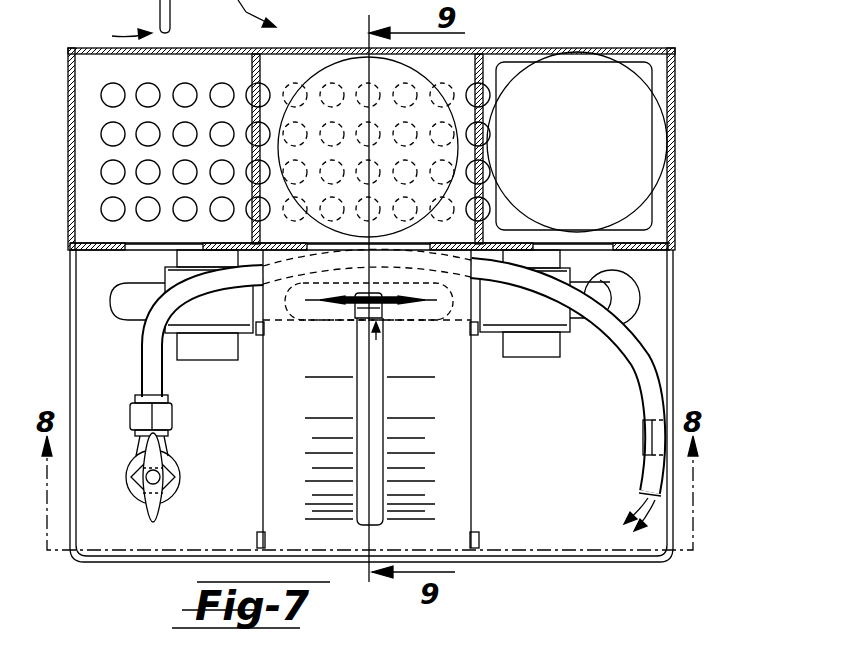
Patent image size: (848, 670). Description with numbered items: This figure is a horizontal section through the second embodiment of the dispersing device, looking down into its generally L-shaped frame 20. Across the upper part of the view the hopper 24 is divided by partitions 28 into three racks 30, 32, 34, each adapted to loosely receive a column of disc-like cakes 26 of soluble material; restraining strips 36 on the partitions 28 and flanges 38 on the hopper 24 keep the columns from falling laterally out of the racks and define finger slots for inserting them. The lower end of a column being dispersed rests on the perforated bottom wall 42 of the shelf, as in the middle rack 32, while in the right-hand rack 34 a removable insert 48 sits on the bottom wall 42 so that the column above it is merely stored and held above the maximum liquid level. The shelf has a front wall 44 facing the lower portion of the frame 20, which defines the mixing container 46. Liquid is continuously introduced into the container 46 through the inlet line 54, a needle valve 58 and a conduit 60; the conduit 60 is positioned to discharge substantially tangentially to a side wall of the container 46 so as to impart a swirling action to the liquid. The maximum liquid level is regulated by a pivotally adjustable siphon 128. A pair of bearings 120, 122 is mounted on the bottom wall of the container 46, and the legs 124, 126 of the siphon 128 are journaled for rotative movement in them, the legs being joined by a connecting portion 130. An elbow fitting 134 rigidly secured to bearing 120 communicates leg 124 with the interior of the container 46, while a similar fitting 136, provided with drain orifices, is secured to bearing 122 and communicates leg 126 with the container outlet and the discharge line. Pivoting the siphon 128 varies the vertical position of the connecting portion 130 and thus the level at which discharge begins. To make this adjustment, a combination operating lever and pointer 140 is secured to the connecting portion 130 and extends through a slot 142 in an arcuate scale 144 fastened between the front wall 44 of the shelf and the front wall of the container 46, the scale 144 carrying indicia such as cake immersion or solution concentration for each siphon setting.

The frame 20 is at (425, 293).
The hopper 24 is at (680, 100).
The cakes 26 is at (398, 80).
The partitions 28 is at (295, 131).
The rack 30 is at (295, 131).
The rack 32 is at (302, 52).
The rack 34 is at (547, 125).
The restraining strips 36 is at (240, 246).
The flanges 38 is at (88, 256).
The perforated bottom wall 42 is at (90, 70).
The front wall 44 is at (140, 255).
The container 46 is at (662, 338).
The removable insert 48 is at (645, 208).
The inlet line 54 is at (158, 14).
The needle valve 58 is at (140, 482).
The conduit 60 is at (650, 388).
The bearing 120 is at (170, 318).
The bearing 122 is at (575, 314).
The leg 124 is at (258, 337).
The leg 126 is at (470, 328).
The siphon 128 is at (380, 336).
The connecting portion 130 is at (395, 306).
The elbow fitting 134 is at (130, 312).
The fitting 136 is at (614, 292).
The operating lever and pointer 140 is at (350, 302).
The slot 142 is at (362, 397).
The arcuate scale 144 is at (472, 452).